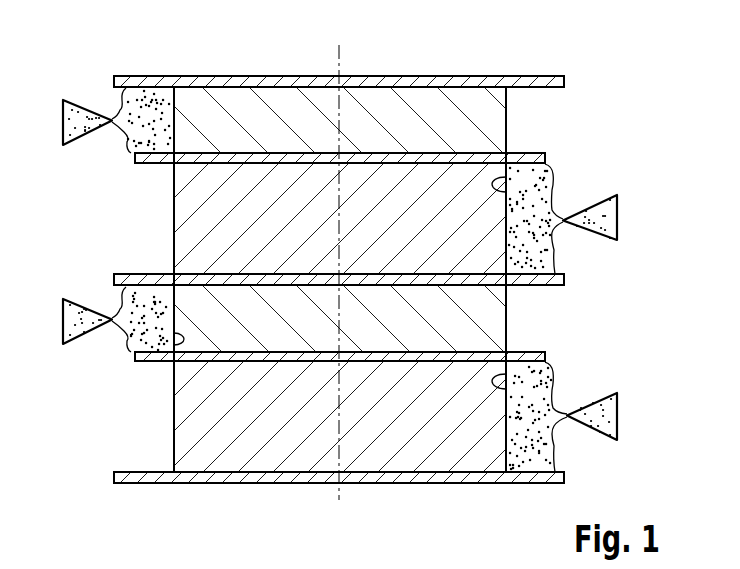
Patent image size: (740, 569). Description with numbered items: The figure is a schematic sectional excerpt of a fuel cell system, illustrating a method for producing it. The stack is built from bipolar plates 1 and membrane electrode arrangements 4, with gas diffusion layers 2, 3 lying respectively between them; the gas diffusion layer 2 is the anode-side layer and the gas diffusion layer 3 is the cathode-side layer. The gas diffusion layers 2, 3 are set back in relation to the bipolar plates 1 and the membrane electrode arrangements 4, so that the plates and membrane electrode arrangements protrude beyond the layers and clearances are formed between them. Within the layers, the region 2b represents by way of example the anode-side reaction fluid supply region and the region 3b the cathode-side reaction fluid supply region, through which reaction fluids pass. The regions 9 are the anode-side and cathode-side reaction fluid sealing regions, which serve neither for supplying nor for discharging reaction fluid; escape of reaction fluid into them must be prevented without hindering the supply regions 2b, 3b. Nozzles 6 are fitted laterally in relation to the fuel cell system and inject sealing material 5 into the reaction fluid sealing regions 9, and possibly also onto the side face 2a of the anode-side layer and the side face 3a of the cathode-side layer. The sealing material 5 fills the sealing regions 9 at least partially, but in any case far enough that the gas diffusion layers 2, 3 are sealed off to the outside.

The bipolar plate 1 is at (311, 80).
The anode-side gas diffusion layer 2 is at (402, 103).
The side face of the anode-side gas diffusion layer 2a is at (174, 107).
The anode-side reaction fluid supply region 2b is at (522, 126).
The cathode-side gas diffusion layer 3 is at (184, 207).
The side face of the cathode-side gas diffusion layer 3a is at (508, 179).
The cathode-side reaction fluid supply region 3b is at (152, 240).
The membrane electrode arrangement 4 is at (542, 158).
The sealing material 5 is at (140, 146).
The nozzle 6 is at (618, 216).
The reaction fluid sealing region 9 is at (112, 102).